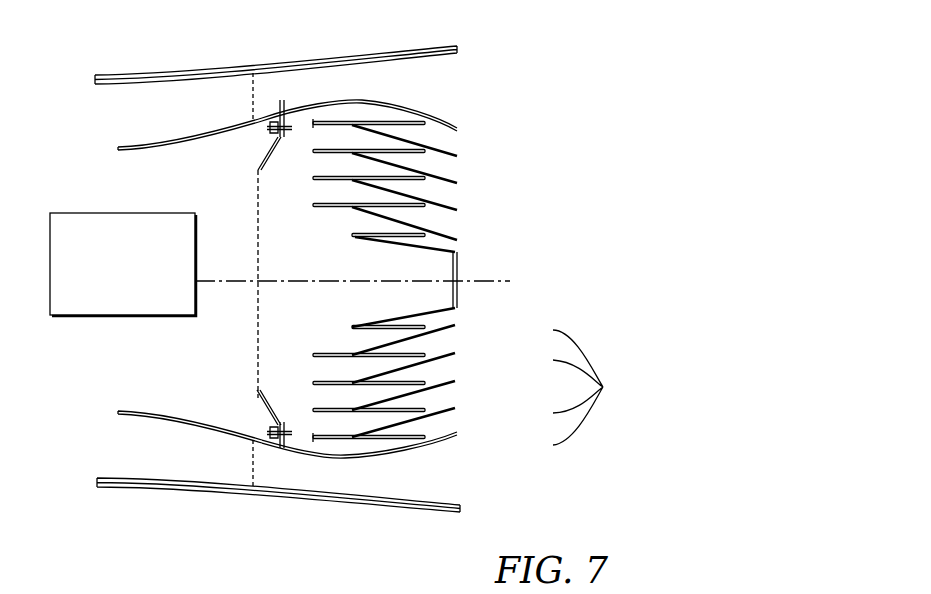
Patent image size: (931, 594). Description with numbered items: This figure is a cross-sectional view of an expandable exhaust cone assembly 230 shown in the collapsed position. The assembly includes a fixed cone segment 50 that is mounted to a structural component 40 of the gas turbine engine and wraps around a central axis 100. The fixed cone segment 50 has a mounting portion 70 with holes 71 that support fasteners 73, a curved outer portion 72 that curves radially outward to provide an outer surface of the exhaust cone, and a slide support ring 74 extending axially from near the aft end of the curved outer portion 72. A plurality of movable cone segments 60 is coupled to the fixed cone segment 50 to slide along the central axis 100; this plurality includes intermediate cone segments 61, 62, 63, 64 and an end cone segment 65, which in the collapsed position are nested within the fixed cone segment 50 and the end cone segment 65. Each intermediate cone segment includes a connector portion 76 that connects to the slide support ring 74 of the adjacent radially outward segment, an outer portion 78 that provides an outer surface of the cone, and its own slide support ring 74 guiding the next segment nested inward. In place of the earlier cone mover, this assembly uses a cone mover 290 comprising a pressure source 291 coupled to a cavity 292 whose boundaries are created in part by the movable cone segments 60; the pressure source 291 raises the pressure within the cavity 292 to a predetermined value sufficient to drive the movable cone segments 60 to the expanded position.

The expandable exhaust cone assembly 230 is at (561, 77).
The structural component 40 is at (168, 139).
The mounting portion 70 is at (281, 99).
The holes 71 is at (298, 117).
The fasteners 73 is at (318, 122).
The curved outer portion 72 is at (363, 98).
The slide support ring 74 is at (380, 111).
The connector portion 76 is at (331, 135).
The outer portion 78 is at (440, 166).
The cavity 292 is at (273, 208).
The pressure source 291 is at (108, 316).
The central axis 100 is at (293, 295).
The end cone segment 65 is at (477, 315).
The intermediate cone segment 64 is at (477, 343).
The intermediate cone segment 63 is at (477, 371).
The intermediate cone segment 62 is at (477, 398).
The intermediate cone segment 61 is at (477, 427).
The plurality of movable cone segments 60 is at (553, 387).
The fixed cone segment 50 is at (447, 453).
The cone mover 290 is at (77, 422).